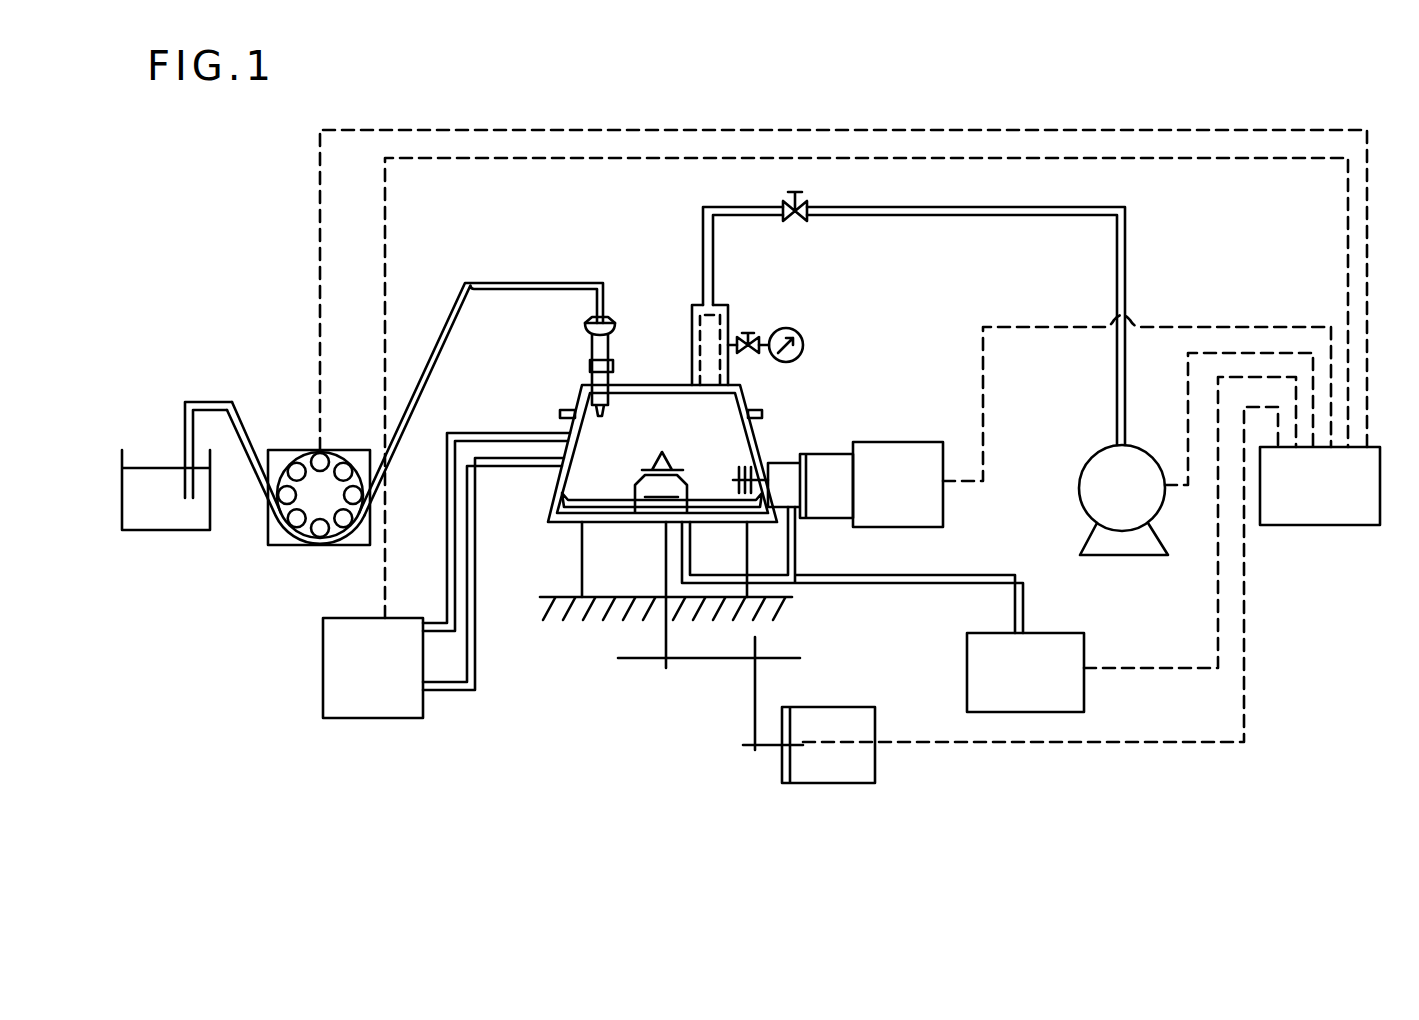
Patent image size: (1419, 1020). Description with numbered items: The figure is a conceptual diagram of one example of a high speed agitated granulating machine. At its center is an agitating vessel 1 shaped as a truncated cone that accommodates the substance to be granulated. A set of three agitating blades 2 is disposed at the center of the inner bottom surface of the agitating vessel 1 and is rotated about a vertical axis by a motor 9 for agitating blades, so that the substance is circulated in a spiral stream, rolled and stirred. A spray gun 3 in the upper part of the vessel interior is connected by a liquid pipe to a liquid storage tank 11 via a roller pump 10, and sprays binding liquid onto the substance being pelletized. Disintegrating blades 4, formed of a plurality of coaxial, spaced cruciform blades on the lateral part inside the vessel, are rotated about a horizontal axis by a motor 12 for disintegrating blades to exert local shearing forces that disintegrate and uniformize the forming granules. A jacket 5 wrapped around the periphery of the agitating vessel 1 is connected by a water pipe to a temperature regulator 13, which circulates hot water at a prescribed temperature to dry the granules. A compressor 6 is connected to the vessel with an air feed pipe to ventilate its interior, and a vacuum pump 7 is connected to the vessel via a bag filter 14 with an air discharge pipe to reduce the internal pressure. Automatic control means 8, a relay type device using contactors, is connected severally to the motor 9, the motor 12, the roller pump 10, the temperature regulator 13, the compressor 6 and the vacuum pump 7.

The agitating vessel 1 is at (652, 405).
The agitating blades 2 is at (587, 499).
The spray gun 3 is at (590, 352).
The disintegrating blades 4 is at (746, 459).
The jacket 5 is at (762, 425).
The compressor 6 is at (978, 648).
The vacuum pump 7 is at (1079, 478).
The automatic control means 8 is at (1375, 458).
The motor for agitating blades 9 is at (855, 707).
The roller pump 10 is at (282, 450).
The liquid storage tank 11 is at (121, 470).
The motor for disintegrating blades 12 is at (903, 450).
The temperature regulator 13 is at (330, 647).
The bag filter 14 is at (728, 317).